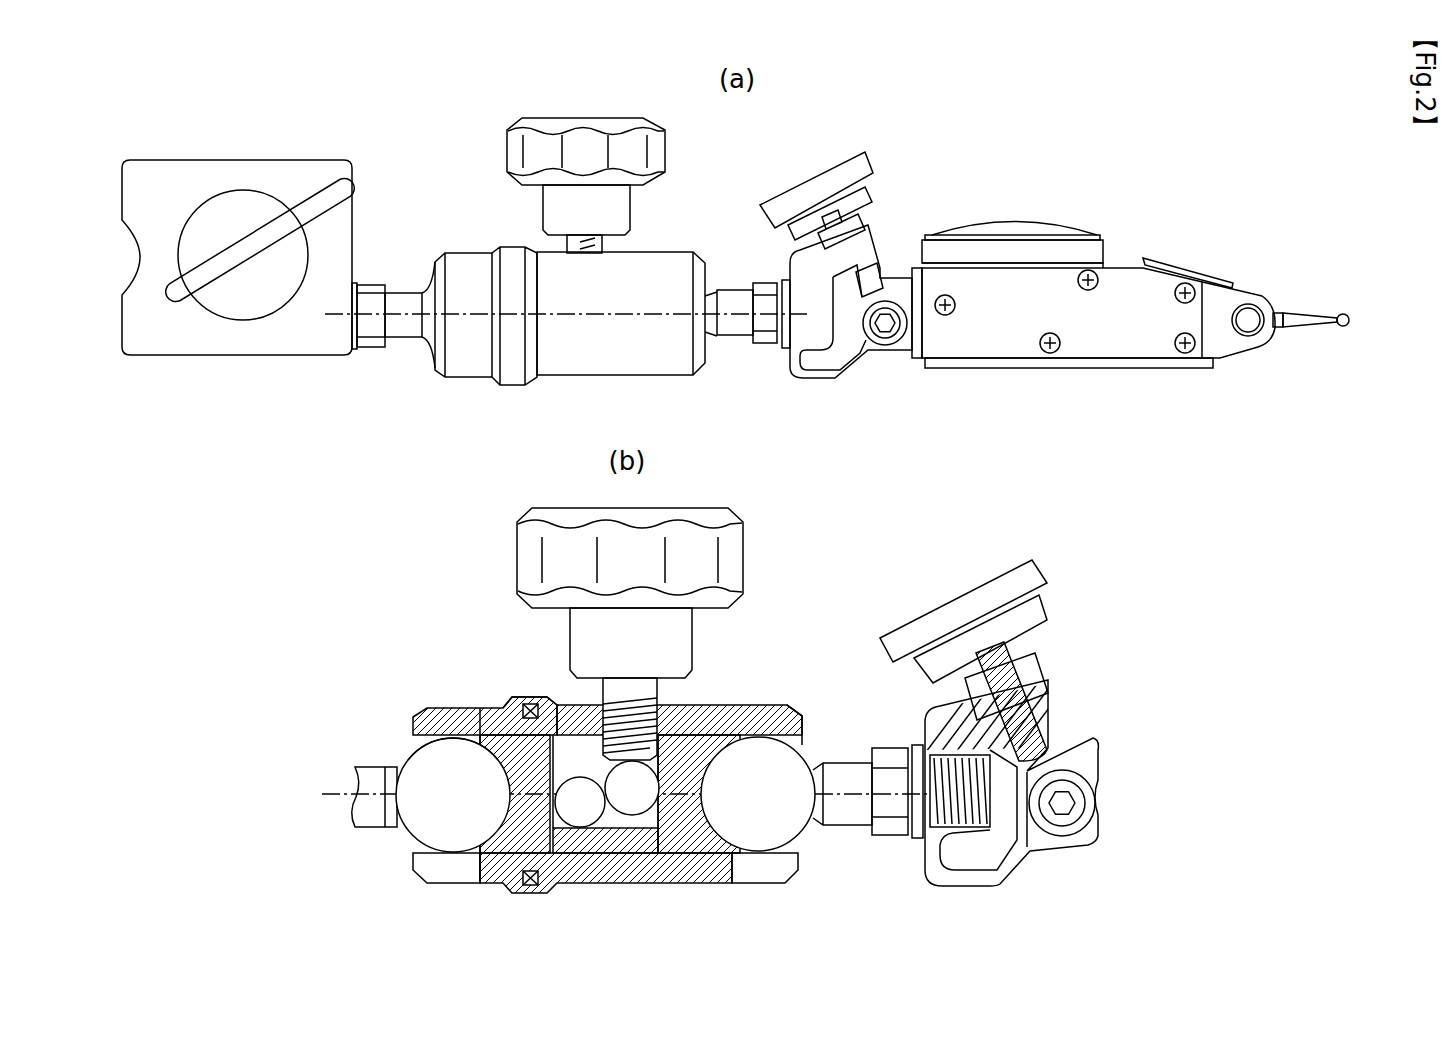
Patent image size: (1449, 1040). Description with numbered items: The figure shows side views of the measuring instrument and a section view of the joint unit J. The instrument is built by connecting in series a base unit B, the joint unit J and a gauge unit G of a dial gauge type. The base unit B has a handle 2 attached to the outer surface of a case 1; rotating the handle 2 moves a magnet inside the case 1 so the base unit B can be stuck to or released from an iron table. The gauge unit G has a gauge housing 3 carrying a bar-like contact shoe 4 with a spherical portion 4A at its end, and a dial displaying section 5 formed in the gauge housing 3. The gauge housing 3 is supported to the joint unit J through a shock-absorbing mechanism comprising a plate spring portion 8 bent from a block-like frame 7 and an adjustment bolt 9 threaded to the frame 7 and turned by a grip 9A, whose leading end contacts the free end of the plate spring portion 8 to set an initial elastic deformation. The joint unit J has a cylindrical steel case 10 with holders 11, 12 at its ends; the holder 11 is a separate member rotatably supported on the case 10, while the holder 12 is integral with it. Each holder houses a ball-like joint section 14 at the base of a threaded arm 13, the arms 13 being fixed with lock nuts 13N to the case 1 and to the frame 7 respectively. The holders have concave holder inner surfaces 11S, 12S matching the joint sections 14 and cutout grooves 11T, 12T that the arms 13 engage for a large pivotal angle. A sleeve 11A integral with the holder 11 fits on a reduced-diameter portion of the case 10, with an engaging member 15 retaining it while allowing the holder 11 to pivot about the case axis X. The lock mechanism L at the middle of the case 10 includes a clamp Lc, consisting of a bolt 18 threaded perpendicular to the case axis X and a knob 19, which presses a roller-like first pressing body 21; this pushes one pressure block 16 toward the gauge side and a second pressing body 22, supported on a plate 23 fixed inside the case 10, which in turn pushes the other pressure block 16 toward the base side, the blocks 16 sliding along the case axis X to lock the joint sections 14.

The case 1 is at (140, 342).
The handle 2 is at (300, 210).
The gauge housing 3 is at (1087, 347).
The contact shoe 4 is at (1293, 318).
The spherical portion 4A is at (1347, 315).
The dial displaying section 5 is at (1090, 248).
The frame 7 is at (866, 226).
The plate spring portion 8 is at (838, 378).
The adjustment bolt 9 is at (867, 283).
The grip 9A is at (818, 184).
The case 10 is at (625, 268).
The holder 11 is at (440, 280).
The sleeve 11A is at (510, 705).
The holder inner surface 11S is at (450, 740).
The cutout groove 11T is at (428, 880).
The holder 12 is at (697, 262).
The holder inner surface 12S is at (790, 713).
The cutout groove 12T is at (745, 872).
The arm 13 is at (403, 300).
The lock nut 13N is at (368, 340).
The joint section 14 is at (422, 290).
The engaging member 15 is at (530, 706).
The pressure block 16 is at (487, 850).
The bolt 18 is at (567, 243).
The knob 19 is at (655, 150).
The first pressing body 21 is at (632, 802).
The second pressing body 22 is at (585, 822).
The plate 23 is at (605, 850).
The base unit B is at (157, 140).
The lock mechanism L is at (452, 108).
The clamp Lc is at (608, 108).
The gauge unit G is at (1046, 154).
The joint unit J is at (448, 409).
The case axis X is at (644, 555).